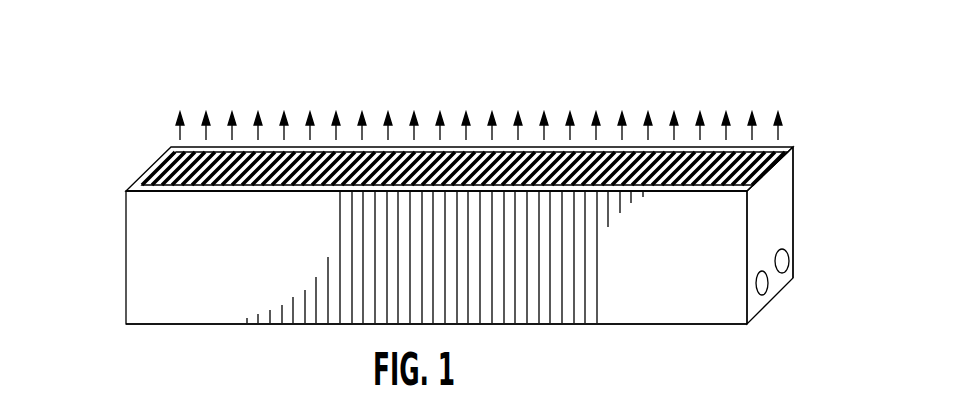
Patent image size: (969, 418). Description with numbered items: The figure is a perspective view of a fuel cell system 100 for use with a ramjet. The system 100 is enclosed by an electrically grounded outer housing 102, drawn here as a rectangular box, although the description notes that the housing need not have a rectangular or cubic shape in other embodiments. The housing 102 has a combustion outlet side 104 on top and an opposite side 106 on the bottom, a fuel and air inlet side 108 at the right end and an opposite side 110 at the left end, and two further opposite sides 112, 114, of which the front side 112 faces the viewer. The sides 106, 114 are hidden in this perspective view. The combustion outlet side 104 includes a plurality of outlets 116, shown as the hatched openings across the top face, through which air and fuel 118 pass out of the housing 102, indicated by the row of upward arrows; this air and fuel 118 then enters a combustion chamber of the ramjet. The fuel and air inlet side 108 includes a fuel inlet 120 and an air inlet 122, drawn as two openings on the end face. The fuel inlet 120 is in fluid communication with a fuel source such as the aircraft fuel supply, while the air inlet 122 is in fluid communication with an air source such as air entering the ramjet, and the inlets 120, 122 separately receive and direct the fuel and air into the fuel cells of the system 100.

The fuel cell system 100 is at (93, 46).
The outer housing 102 is at (126, 190).
The combustion outlet side 104 is at (767, 159).
The opposite side 106 is at (619, 334).
The fuel and air inlet side 108 is at (782, 217).
The opposite side 110 is at (116, 255).
The side 112 is at (506, 306).
The side 114 is at (805, 168).
The outlets 116 is at (522, 153).
The air and fuel 118 is at (176, 131).
The fuel inlet 120 is at (762, 283).
The air inlet 122 is at (782, 261).